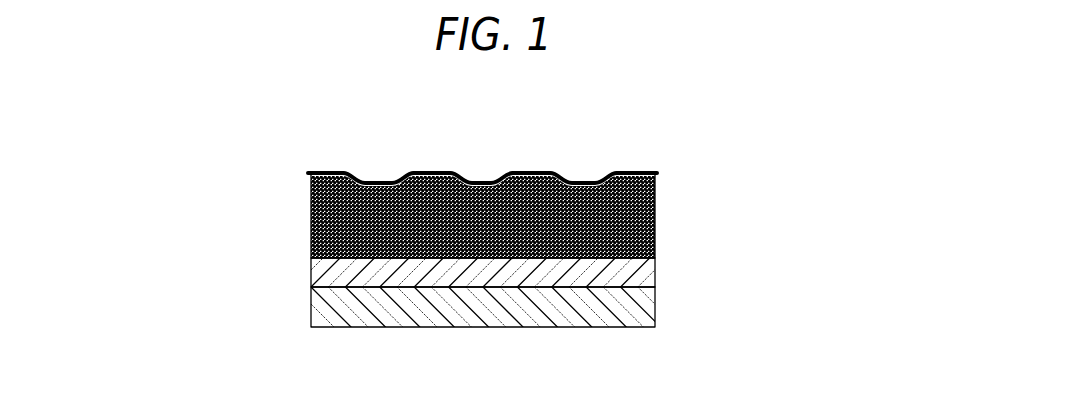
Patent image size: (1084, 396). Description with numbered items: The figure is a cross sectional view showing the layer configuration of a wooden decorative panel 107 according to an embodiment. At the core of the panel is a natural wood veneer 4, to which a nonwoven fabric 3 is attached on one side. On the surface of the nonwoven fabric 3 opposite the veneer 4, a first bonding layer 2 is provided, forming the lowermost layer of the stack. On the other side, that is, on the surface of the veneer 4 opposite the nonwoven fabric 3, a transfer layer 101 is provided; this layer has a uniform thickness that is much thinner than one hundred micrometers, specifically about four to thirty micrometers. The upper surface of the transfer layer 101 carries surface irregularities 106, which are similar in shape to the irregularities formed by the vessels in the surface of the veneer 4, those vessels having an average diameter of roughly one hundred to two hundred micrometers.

The transfer layer 101 is at (641, 167).
The surface irregularities 106 is at (585, 182).
The wooden decorative panel 107 is at (297, 173).
The veneer 4 is at (652, 218).
The nonwoven fabric 3 is at (652, 273).
The first bonding layer 2 is at (652, 303).